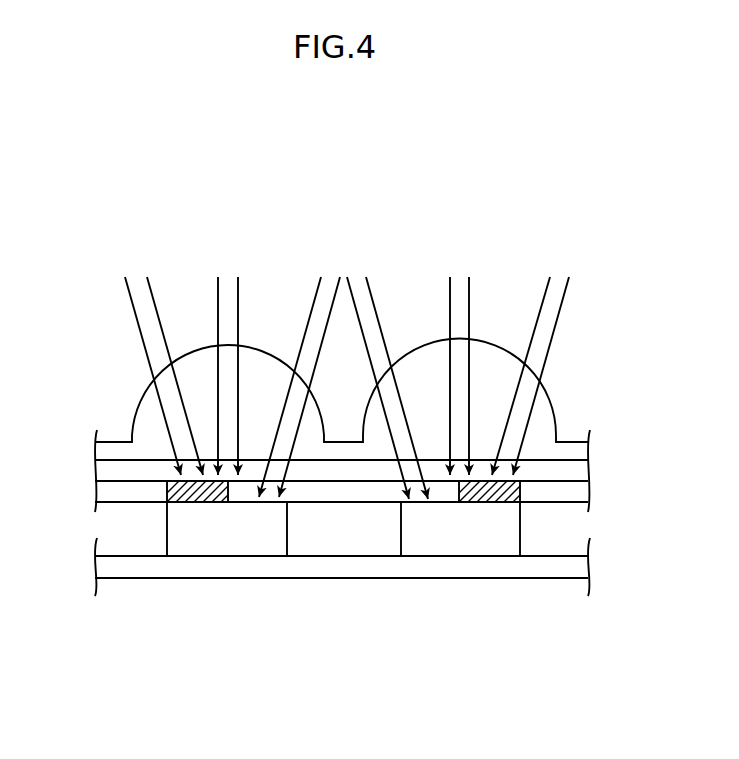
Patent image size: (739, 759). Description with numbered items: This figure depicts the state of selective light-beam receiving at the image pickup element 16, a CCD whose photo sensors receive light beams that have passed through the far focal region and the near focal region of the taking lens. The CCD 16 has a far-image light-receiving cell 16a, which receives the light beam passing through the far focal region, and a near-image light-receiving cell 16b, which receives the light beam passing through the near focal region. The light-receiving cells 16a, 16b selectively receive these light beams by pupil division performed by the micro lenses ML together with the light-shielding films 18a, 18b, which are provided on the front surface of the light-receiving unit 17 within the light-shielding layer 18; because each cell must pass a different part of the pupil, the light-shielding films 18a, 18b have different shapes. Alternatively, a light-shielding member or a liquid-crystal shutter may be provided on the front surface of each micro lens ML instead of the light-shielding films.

The image pickup element 16 is at (347, 304).
The far-image light-receiving cell 16a is at (499, 343).
The near-image light-receiving cell 16b is at (273, 343).
The micro lens ML is at (138, 405).
The light-receiving unit 17 is at (262, 543).
The light shielding film layer 18 is at (137, 492).
The light-shielding film 18a is at (502, 502).
The light-shielding film 18b is at (207, 498).